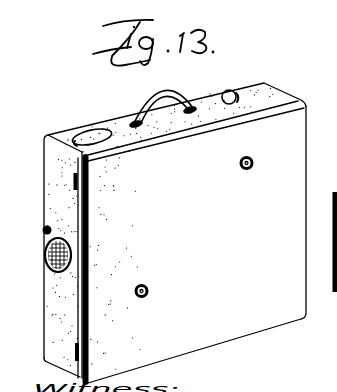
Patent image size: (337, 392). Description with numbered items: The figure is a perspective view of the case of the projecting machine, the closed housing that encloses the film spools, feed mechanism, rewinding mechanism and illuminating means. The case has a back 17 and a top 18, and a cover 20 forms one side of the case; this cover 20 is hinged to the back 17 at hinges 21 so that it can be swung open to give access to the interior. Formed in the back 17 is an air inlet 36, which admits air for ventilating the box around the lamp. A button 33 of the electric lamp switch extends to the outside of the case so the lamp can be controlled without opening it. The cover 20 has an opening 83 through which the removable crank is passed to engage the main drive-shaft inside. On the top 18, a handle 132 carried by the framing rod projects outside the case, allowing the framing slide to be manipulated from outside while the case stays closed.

The back 17 is at (46, 294).
The top 18 is at (117, 120).
The cover 20 is at (196, 244).
The hinge 21 is at (74, 182).
The button 33 is at (48, 228).
The inlet 36 is at (58, 272).
The opening 83 is at (242, 168).
The handle 132 is at (231, 90).